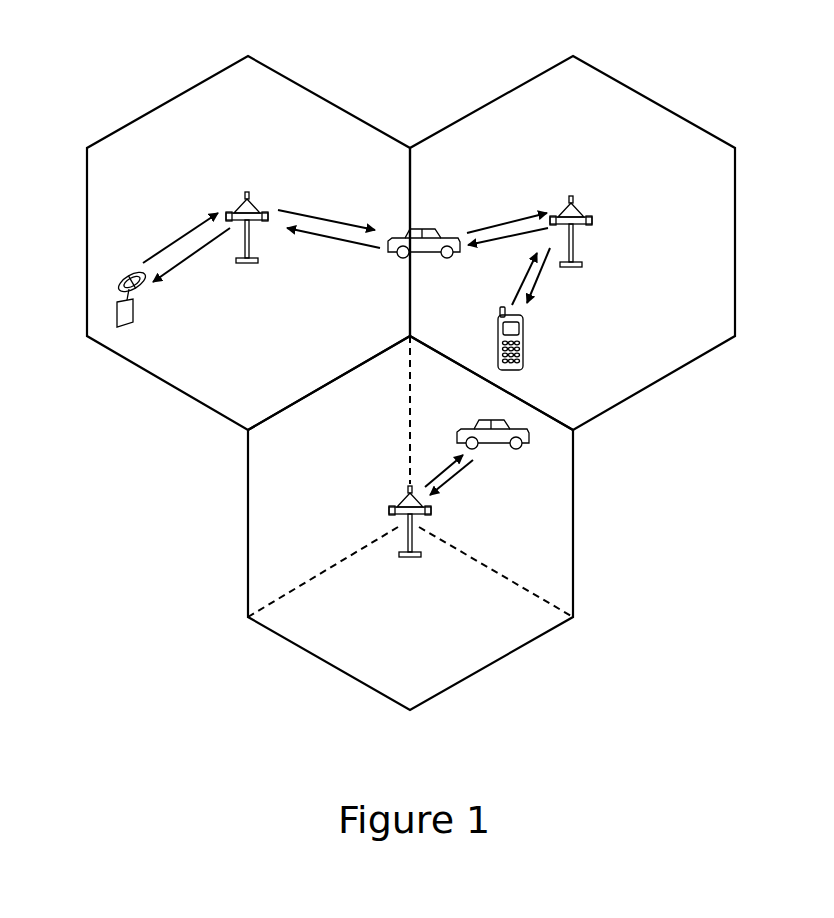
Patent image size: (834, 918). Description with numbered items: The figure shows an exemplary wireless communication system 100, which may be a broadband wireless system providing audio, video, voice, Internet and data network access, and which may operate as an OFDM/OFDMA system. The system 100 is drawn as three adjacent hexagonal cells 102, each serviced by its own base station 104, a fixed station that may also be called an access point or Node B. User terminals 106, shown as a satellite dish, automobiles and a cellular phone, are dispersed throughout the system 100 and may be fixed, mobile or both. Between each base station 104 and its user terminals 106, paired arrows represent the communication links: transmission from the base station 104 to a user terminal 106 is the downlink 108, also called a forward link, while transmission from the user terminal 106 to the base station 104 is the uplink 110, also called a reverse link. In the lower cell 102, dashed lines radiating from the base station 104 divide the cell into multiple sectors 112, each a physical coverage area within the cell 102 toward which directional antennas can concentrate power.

The wireless communication system 100 is at (788, 50).
The cell 102 is at (185, 92).
The base station 104 is at (392, 505).
The user terminal 106 is at (347, 354).
The downlink 108 is at (183, 267).
The uplink 110 is at (178, 242).
The sector 112 is at (257, 524).